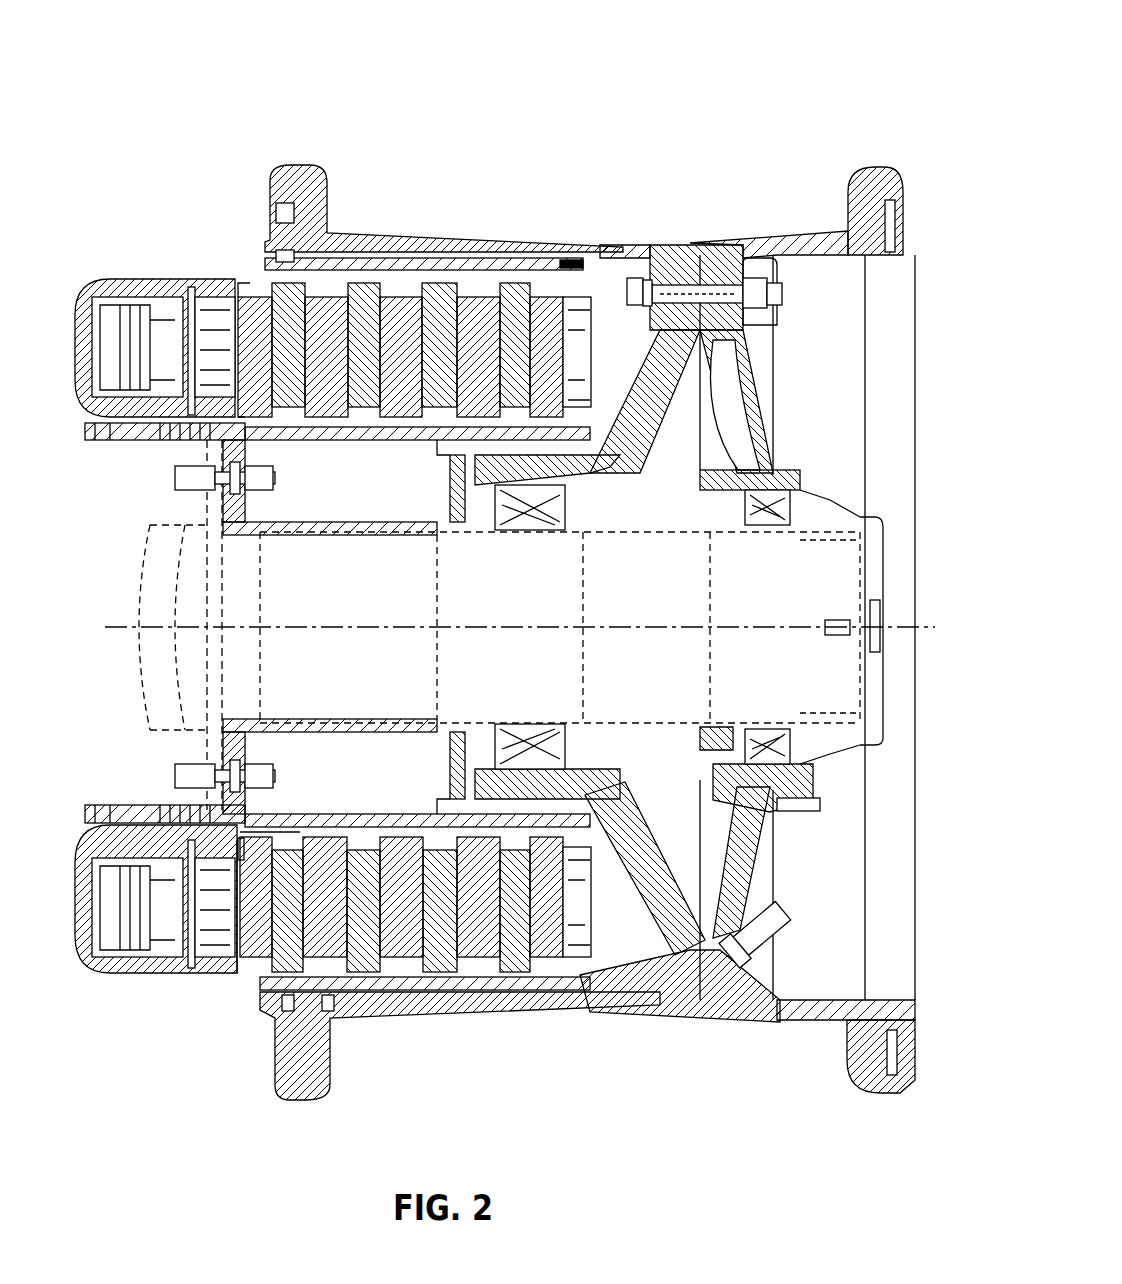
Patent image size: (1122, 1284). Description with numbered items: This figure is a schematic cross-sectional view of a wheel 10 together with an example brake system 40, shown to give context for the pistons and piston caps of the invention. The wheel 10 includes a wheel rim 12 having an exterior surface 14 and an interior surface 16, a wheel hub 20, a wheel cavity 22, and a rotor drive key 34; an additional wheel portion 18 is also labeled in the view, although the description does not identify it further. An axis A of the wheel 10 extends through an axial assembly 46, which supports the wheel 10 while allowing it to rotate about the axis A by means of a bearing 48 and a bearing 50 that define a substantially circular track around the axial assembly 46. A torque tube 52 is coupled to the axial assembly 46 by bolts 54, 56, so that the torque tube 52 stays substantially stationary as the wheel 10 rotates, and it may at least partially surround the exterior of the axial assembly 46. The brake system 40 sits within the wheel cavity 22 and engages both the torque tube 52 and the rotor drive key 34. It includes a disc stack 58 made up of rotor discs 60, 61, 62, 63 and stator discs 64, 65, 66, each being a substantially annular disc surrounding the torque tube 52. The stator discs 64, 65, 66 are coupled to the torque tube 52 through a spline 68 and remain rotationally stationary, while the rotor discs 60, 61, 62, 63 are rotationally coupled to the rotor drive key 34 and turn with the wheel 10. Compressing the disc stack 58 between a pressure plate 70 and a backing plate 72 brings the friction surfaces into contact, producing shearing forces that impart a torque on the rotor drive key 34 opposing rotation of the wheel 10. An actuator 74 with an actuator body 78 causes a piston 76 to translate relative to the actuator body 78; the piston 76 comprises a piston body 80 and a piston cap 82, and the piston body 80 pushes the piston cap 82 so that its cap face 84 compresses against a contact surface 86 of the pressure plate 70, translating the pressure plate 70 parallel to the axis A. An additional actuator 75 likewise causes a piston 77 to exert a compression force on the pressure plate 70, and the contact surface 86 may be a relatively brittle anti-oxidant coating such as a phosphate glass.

The wheel 10 is at (773, 60).
The wheel rim 12 is at (517, 168).
The exterior surface 14 is at (596, 262).
The interior surface 16 is at (626, 278).
The rotor carrier ring 18 is at (492, 248).
The wheel hub 20 is at (537, 467).
The wheel cavity 22 is at (243, 286).
The rotor drive key 34 is at (544, 975).
The brake system 40 is at (140, 305).
The axial assembly 46 is at (687, 535).
The bearing 48 is at (764, 520).
The bearing 50 is at (518, 505).
The torque tube 52 is at (395, 859).
The bolt 54 is at (176, 476).
The bolt 56 is at (196, 782).
The disc stack 58 is at (401, 867).
The rotor disc 60 is at (287, 911).
The rotor disc 61 is at (363, 911).
The rotor disc 62 is at (440, 911).
The rotor disc 63 is at (515, 911).
The stator disc 64 is at (325, 897).
The stator disc 65 is at (401, 897).
The stator disc 66 is at (478, 897).
The spline 68 is at (287, 835).
The pressure plate 70 is at (256, 897).
The backing plate 72 is at (546, 897).
The actuator 74 is at (143, 941).
The actuator 75 is at (110, 349).
The piston 76 is at (179, 959).
The piston 77 is at (208, 285).
The actuator body 78 is at (148, 940).
The piston body 80 is at (213, 960).
The piston cap 82 is at (235, 925).
The cap face 84 is at (238, 918).
The contact surface 86 is at (240, 860).
The axis A is at (140, 627).